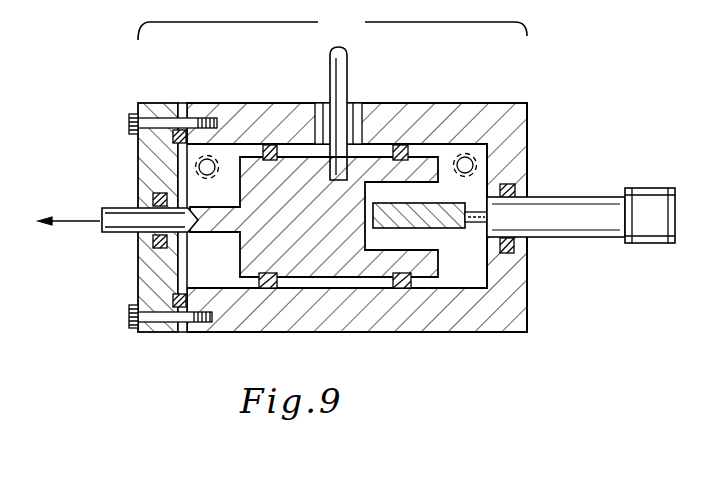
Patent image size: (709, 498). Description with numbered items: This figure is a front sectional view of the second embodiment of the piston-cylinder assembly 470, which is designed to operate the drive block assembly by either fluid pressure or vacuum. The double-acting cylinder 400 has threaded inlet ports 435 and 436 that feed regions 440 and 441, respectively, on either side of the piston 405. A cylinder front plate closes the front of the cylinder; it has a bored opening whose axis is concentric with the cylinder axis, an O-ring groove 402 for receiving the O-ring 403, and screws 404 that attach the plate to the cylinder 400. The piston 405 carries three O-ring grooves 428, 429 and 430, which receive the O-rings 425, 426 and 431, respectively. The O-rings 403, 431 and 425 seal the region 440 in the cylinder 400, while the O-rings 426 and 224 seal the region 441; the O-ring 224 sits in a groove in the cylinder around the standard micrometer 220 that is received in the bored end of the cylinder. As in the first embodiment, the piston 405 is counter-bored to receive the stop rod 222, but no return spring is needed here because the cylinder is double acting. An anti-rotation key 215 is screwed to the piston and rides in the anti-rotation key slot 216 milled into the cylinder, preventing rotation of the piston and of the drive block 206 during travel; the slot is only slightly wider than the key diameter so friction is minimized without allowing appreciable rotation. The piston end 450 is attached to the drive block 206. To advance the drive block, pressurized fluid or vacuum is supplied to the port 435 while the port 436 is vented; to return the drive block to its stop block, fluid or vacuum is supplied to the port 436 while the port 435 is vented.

The piston-cylinder assembly 470 is at (332, 26).
The double-acting cylinder 400 is at (283, 82).
The O-ring 403 is at (160, 135).
The O-ring groove 402 is at (177, 150).
The screws 404 is at (130, 118).
The piston 405 is at (382, 163).
The threaded inlet port 435 is at (208, 160).
The threaded inlet port 436 is at (474, 165).
The anti-rotation key 215 is at (331, 68).
The anti-rotation key slot 216 is at (356, 103).
The piston end 450 is at (100, 208).
The drive block 206 is at (68, 222).
The O-ring 431 is at (150, 240).
The O-ring groove 430 is at (165, 252).
The O-ring 425 is at (273, 290).
The O-ring 426 is at (410, 290).
The O-ring groove 428 is at (296, 245).
The O-ring groove 429 is at (393, 275).
The region 440 is at (222, 280).
The region 441 is at (475, 280).
The stop rod 222 is at (458, 229).
The O-ring 224 is at (518, 252).
The micrometer 220 is at (598, 197).